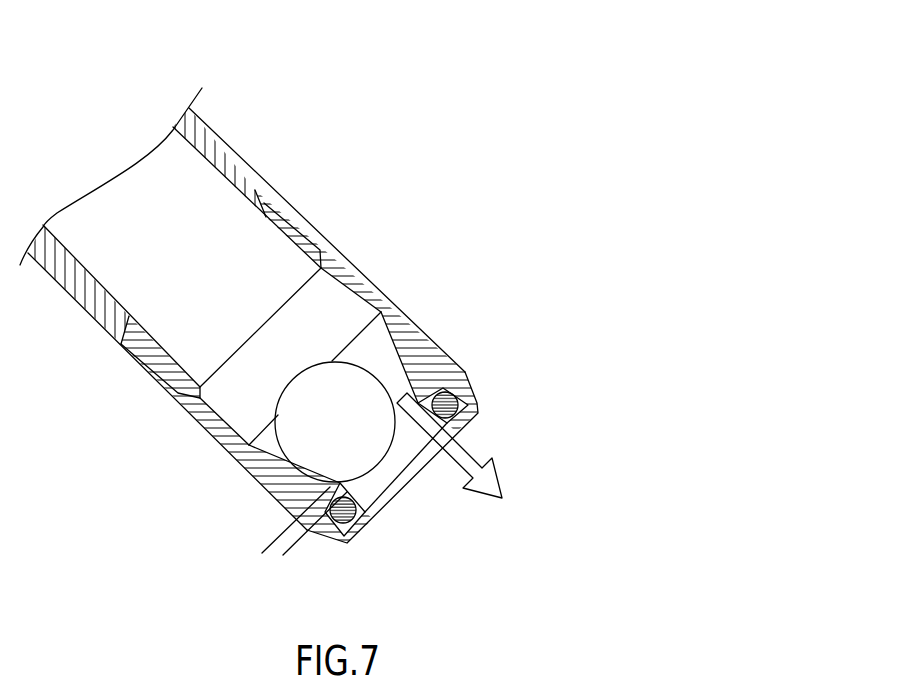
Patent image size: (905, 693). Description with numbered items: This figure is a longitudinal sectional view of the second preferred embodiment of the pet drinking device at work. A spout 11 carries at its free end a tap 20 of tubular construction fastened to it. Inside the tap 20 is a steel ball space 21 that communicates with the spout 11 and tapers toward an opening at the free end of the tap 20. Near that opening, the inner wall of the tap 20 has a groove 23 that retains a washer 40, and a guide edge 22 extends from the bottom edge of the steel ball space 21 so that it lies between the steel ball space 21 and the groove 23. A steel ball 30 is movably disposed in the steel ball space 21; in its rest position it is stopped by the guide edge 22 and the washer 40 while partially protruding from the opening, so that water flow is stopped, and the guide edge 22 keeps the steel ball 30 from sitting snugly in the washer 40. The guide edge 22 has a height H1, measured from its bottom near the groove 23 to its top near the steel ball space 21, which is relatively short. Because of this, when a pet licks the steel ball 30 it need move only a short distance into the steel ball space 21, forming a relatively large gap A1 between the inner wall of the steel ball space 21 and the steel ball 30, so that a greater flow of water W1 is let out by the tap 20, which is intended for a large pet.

The spout 11 is at (228, 147).
The tap 20 is at (341, 252).
The steel ball space 21 is at (402, 352).
The guide edge 22 is at (317, 547).
The groove 23 is at (473, 418).
The steel ball 30 is at (292, 438).
The washer 40 is at (317, 547).
The gap A1 is at (398, 388).
The height of the guide edge H1 is at (295, 583).
The flow of water W1 is at (477, 452).